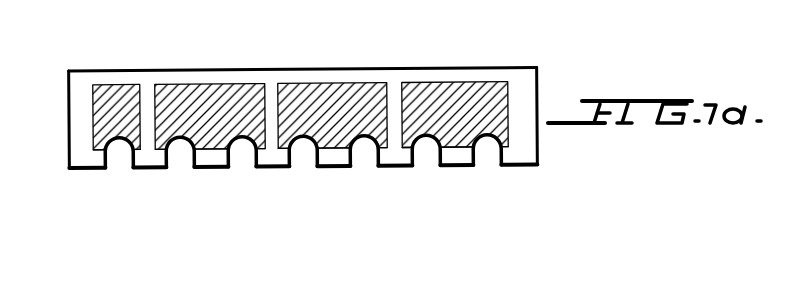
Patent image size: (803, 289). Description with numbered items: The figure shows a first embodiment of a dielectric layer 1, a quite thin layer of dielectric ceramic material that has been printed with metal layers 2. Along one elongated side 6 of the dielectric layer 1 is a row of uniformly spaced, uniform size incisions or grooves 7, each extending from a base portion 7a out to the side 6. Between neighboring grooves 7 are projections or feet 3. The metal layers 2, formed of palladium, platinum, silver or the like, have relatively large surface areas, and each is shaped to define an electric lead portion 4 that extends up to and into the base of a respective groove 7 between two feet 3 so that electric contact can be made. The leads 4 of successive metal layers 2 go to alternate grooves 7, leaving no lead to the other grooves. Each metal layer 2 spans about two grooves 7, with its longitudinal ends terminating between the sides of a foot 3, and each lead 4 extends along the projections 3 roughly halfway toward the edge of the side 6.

The dielectric layer 1 is at (395, 72).
The metal layer 2 is at (118, 95).
The projection or foot 3 is at (213, 163).
The electric lead portion 4 is at (97, 147).
The elongated side 6 is at (273, 68).
The incision or groove 7 is at (117, 150).
The base portion 7a is at (106, 163).